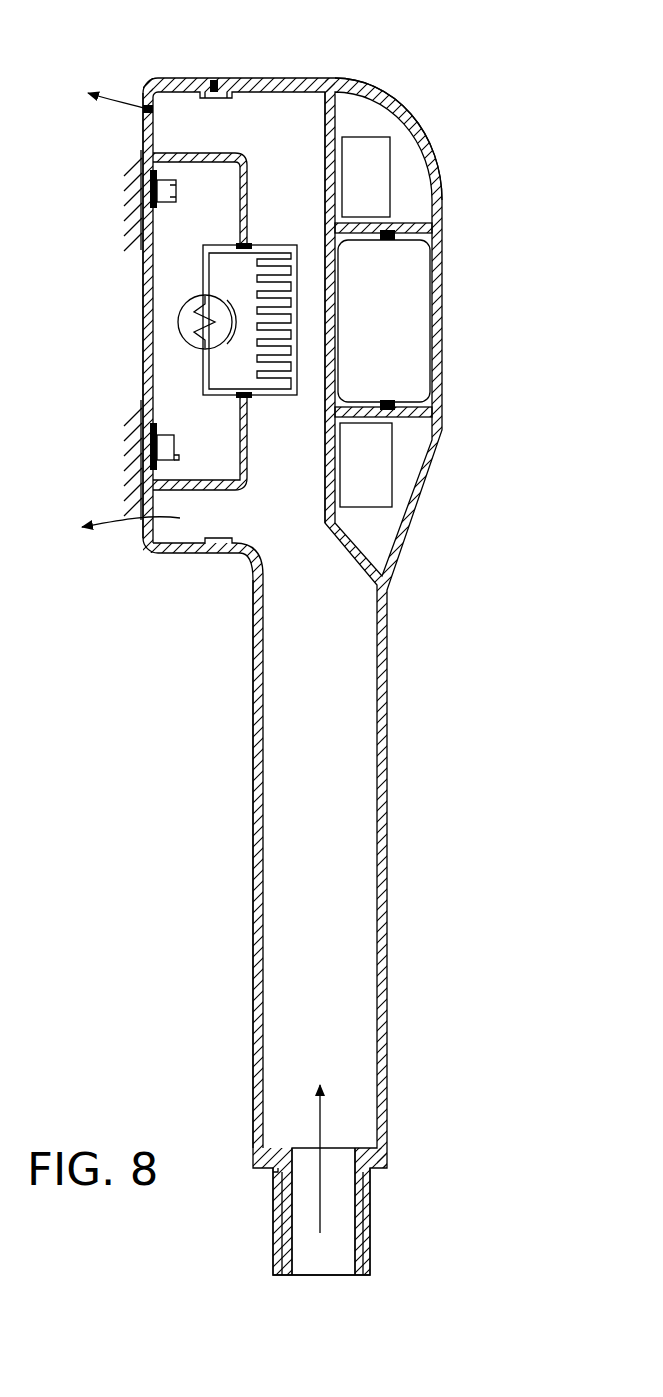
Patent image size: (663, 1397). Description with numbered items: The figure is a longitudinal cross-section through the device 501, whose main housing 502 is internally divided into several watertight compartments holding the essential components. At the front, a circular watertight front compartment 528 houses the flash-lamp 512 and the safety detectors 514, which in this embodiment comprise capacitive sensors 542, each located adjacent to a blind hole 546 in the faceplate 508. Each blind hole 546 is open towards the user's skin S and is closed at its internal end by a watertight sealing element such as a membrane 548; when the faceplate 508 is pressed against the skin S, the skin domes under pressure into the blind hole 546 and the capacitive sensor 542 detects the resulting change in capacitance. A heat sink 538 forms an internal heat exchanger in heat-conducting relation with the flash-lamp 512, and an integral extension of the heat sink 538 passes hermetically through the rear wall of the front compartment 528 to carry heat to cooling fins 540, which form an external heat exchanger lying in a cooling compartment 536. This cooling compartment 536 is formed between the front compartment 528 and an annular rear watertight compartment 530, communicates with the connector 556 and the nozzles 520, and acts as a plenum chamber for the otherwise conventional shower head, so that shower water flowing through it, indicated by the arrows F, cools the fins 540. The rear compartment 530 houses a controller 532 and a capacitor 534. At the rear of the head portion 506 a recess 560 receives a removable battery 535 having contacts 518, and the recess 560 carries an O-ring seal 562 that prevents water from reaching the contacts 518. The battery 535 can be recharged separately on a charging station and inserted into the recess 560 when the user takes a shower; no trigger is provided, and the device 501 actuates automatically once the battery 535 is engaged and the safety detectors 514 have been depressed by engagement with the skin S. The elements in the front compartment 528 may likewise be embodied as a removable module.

The device 501 is at (538, 86).
The main housing 502 is at (300, 78).
The head portion 506 is at (432, 165).
The faceplate 508 is at (146, 342).
The flash-lamp 512 is at (182, 320).
The safety detectors 514 is at (146, 183).
The contacts 518 is at (340, 388).
The nozzles 520 is at (146, 142).
The watertight front compartment 528 is at (183, 408).
The watertight rear compartment 530 is at (405, 458).
The controller 532 is at (372, 487).
The capacitor 534 is at (368, 160).
The battery 535 is at (400, 330).
The cooling compartment 536 is at (285, 517).
The heat sink 538 is at (233, 272).
The cooling fins 540 is at (262, 368).
The capacitive sensors 542 is at (177, 197).
The blind hole 546 is at (150, 203).
The membrane 548 is at (155, 172).
The connector 556 is at (363, 1217).
The recess 560 is at (428, 237).
The O-ring seal 562 is at (400, 401).
The fluid flow F is at (125, 520).
The user's skin S is at (124, 335).